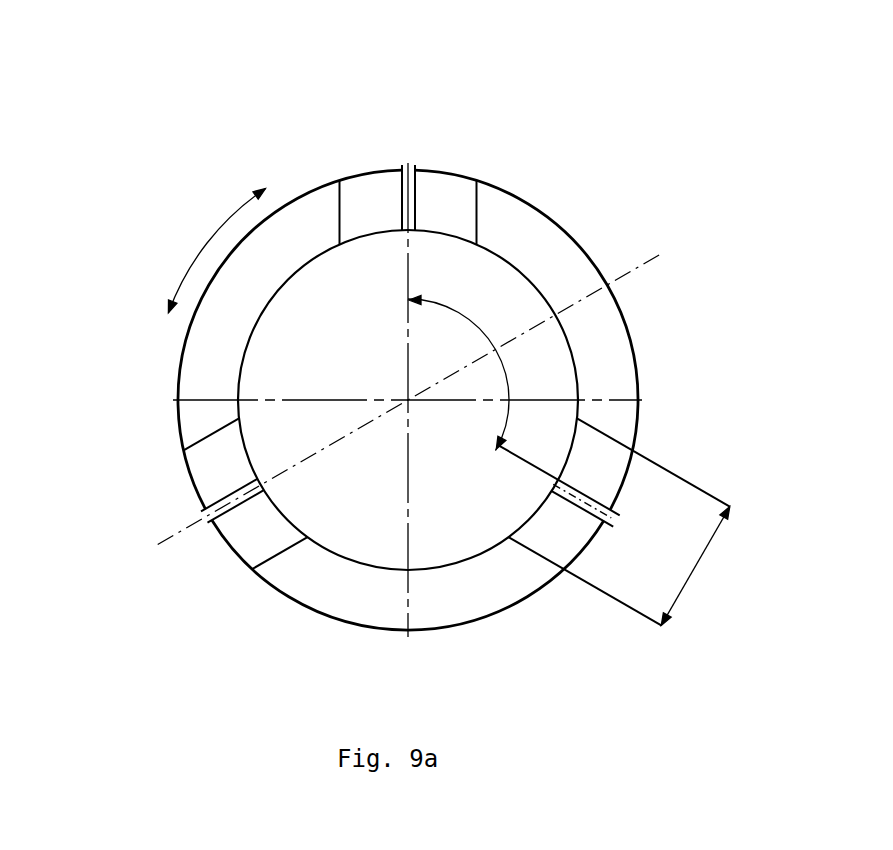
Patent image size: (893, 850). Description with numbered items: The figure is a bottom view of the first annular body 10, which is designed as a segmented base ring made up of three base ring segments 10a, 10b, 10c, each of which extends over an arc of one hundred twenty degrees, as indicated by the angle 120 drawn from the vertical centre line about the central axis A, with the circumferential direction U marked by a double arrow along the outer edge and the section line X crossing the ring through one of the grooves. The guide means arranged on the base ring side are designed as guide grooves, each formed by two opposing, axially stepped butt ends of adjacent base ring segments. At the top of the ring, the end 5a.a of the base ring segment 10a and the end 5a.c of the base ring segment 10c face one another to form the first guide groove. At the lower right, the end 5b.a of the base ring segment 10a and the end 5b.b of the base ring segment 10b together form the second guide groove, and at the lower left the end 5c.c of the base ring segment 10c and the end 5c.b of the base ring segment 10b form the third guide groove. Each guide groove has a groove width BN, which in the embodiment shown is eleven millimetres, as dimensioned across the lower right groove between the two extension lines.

The first annular body 10 is at (366, 372).
The base ring segment 10a is at (547, 207).
The base ring segment 10b is at (493, 620).
The base ring segment 10c is at (197, 372).
The end of base ring segment 10c 5a.c is at (355, 200).
The end of base ring segment 10a 5a.a is at (462, 192).
The end of base ring segment 10a 5b.a is at (607, 478).
The end of base ring segment 10b 5b.b is at (572, 535).
The end of base ring segment 10b 5c.b is at (247, 537).
The end of base ring segment 10c 5c.c is at (205, 472).
The central axis A is at (405, 398).
The section line X- X is at (656, 250).
The circumferential direction U is at (216, 251).
The groove width BN is at (698, 565).
The arc angle of base ring segment 120 is at (470, 373).